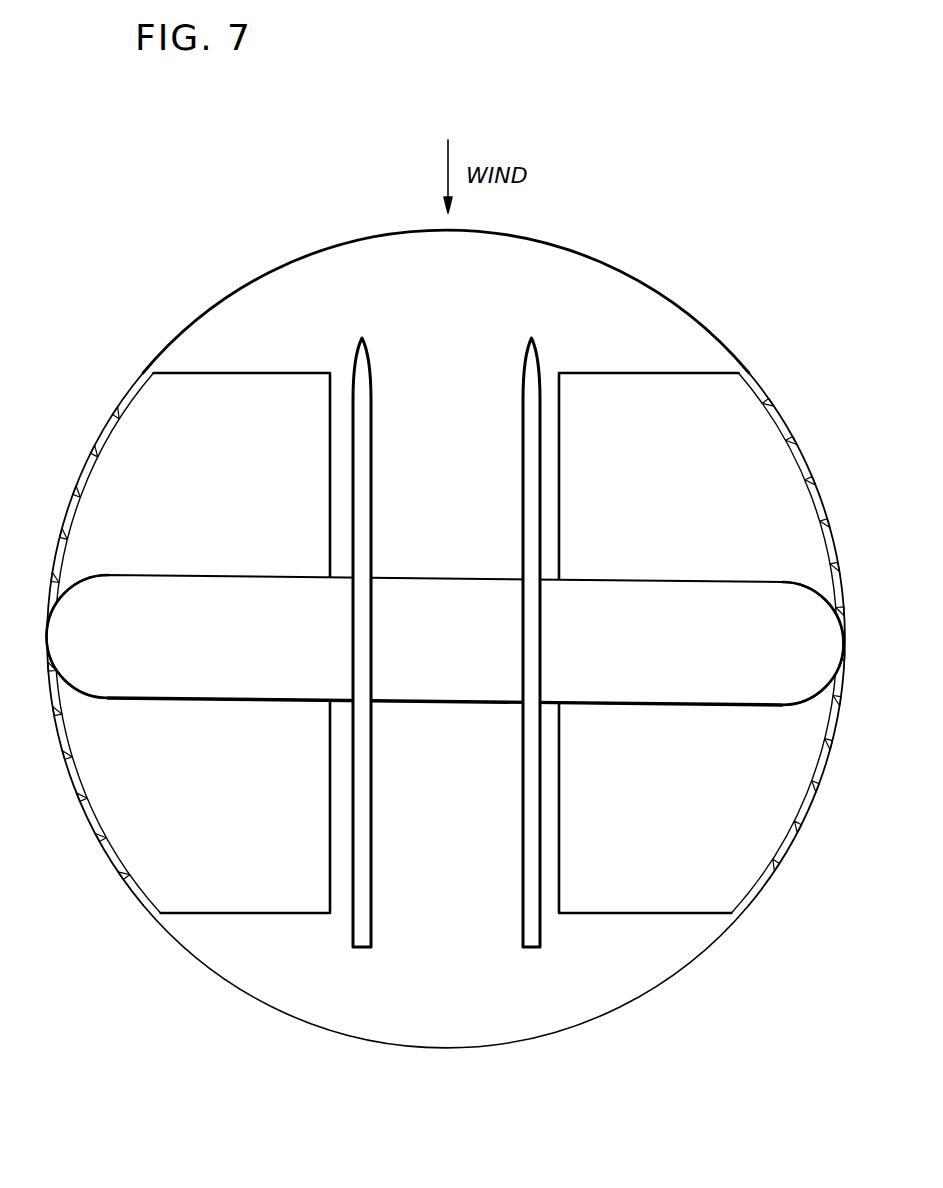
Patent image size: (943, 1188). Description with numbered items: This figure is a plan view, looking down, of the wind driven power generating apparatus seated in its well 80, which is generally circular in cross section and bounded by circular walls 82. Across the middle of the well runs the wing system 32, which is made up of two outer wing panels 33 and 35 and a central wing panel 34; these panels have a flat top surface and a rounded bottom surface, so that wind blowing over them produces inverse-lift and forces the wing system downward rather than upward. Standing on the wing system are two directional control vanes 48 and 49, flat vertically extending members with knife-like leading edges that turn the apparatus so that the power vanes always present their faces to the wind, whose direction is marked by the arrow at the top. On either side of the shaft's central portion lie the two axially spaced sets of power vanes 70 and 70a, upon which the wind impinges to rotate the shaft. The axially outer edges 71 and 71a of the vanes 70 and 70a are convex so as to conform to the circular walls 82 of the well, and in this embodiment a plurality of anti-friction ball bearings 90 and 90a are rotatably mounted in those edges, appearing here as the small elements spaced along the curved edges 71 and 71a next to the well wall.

The wing system 32 is at (441, 570).
The outer wing panel 33 is at (92, 605).
The central wing panel 34 is at (453, 693).
The outer wing panel 35 is at (813, 602).
The directional control vane 48 is at (378, 402).
The directional control vane 49 is at (521, 401).
The power vanes 70 is at (635, 378).
The power vanes 70a is at (288, 377).
The axially outer edge 71 is at (768, 412).
The axially outer edge 71a is at (95, 440).
The well 80 is at (366, 1025).
The circular walls 82 is at (513, 1034).
The ball bearings 90 is at (812, 800).
The ball bearings 90a is at (147, 377).